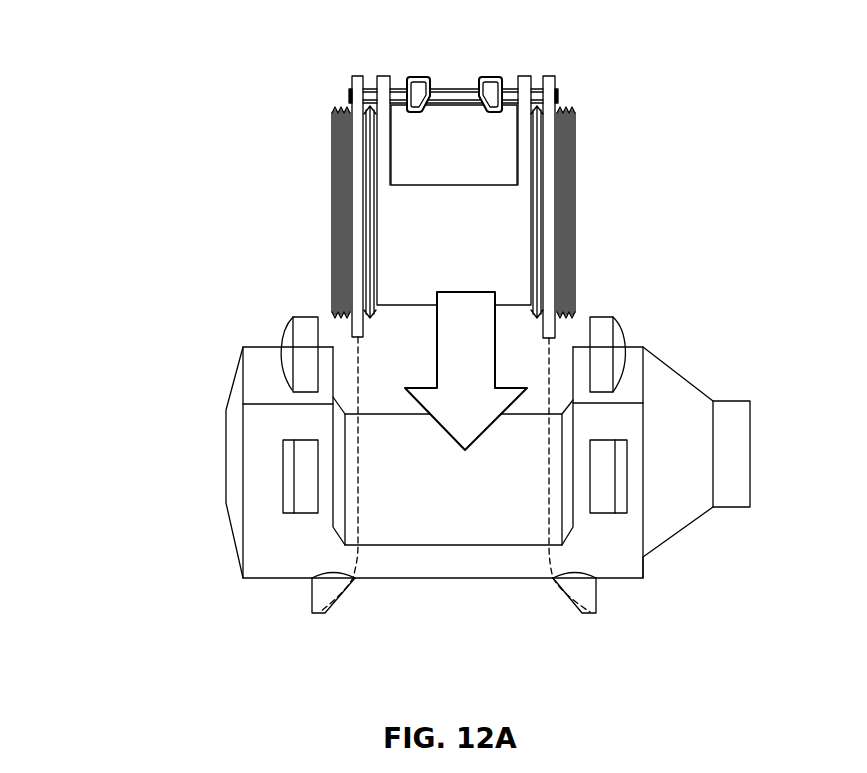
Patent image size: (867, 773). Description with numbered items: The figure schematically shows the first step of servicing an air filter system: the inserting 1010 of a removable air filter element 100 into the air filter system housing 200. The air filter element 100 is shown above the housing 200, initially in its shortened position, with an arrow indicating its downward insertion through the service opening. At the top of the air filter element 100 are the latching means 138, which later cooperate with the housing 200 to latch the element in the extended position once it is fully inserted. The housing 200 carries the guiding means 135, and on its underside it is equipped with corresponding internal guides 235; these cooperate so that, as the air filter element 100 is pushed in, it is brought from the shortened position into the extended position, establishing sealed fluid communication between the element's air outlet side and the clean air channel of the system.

The inserting 1010 is at (113, 73).
The air filter element 100 is at (577, 163).
The latching means 138 is at (413, 77).
The housing 200 is at (257, 435).
The guiding means 135 is at (353, 337).
The internal guides 235 is at (318, 615).